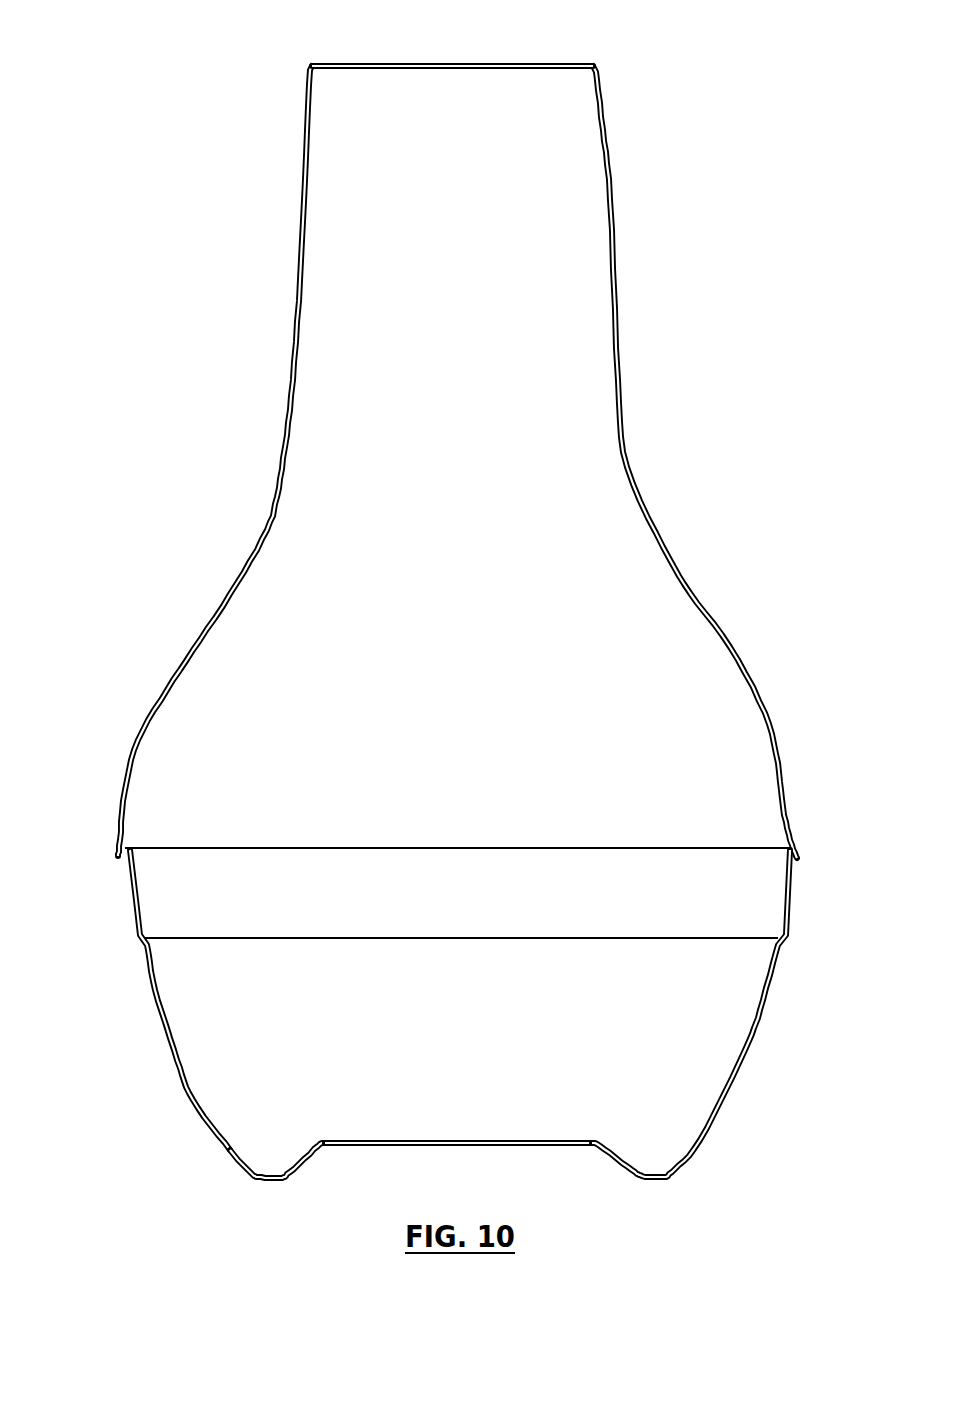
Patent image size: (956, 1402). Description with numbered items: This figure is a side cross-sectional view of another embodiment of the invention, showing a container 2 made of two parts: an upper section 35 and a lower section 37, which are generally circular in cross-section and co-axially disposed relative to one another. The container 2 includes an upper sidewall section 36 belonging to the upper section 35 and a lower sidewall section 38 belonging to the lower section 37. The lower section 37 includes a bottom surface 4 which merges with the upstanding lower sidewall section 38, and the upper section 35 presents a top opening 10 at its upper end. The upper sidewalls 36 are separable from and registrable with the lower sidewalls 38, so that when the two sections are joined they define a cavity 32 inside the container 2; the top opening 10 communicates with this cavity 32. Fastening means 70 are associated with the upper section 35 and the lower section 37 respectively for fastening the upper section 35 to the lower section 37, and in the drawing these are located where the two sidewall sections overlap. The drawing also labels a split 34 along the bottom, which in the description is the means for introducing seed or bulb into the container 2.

The container 2 is at (444, 618).
The top opening 10 is at (522, 50).
The cavity 32 is at (424, 676).
The split 34 is at (428, 1140).
The upper section 35 is at (457, 431).
The upper sidewall section 36 is at (268, 522).
The lower section 37 is at (415, 1040).
The lower sidewall section 38 is at (152, 986).
The bottom surface 4 is at (350, 1148).
The fastening means 70 is at (808, 868).